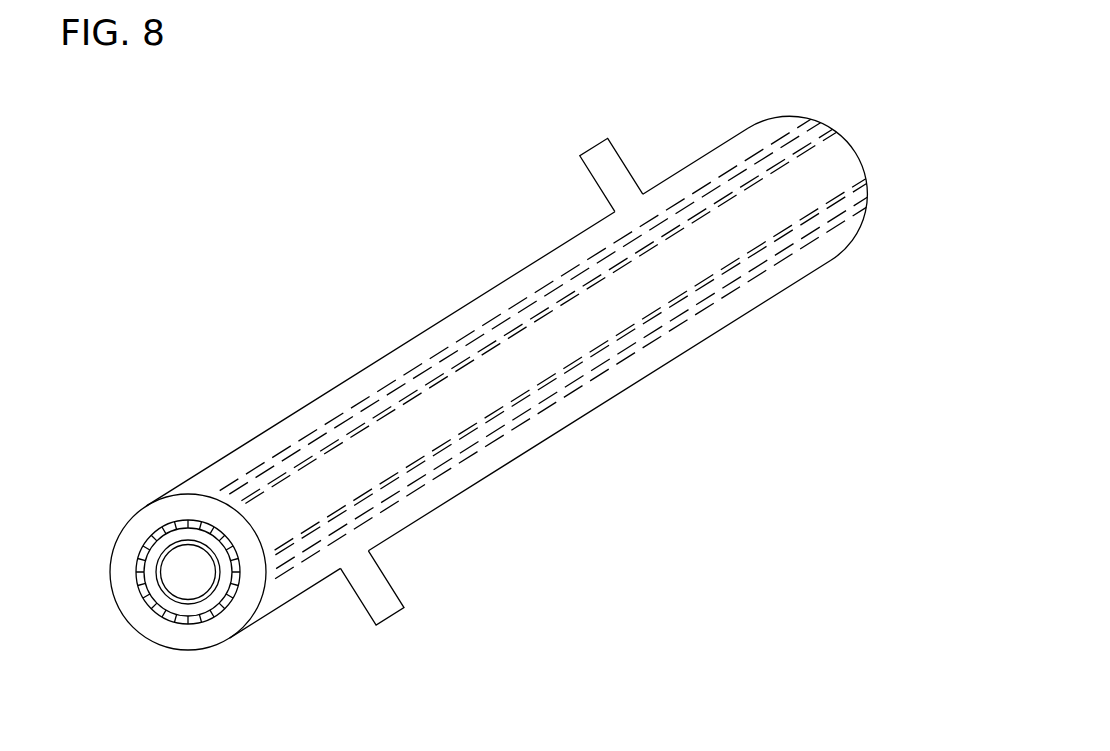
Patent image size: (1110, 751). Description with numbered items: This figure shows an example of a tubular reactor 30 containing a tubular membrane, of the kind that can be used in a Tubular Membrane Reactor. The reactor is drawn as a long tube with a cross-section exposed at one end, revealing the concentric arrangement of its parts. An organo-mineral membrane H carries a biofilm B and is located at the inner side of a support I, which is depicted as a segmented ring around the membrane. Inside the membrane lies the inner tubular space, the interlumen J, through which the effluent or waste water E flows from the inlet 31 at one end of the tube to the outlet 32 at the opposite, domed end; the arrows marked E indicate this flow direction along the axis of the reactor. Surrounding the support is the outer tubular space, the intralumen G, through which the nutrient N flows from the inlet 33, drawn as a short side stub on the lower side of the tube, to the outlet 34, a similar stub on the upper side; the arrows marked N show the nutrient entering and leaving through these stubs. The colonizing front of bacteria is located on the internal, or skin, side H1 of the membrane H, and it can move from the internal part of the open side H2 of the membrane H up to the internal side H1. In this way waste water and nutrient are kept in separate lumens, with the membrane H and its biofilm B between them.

The tubular reactor 30 is at (713, 331).
The inlet 31 is at (128, 486).
The outlet 32 is at (829, 103).
The inlet 33 is at (414, 566).
The outlet 34 is at (564, 182).
The outer tubular space intralumen G is at (134, 519).
The organo-mineral membrane H is at (217, 622).
The internal (or skin) side of the membrane H1 is at (228, 596).
The open side of the membrane H2 is at (190, 634).
The support I is at (168, 617).
The inner tubular space interlumen J is at (168, 567).
The biofilm B is at (192, 581).
The effluent or waste water E is at (88, 633).
The nutrient N is at (405, 645).